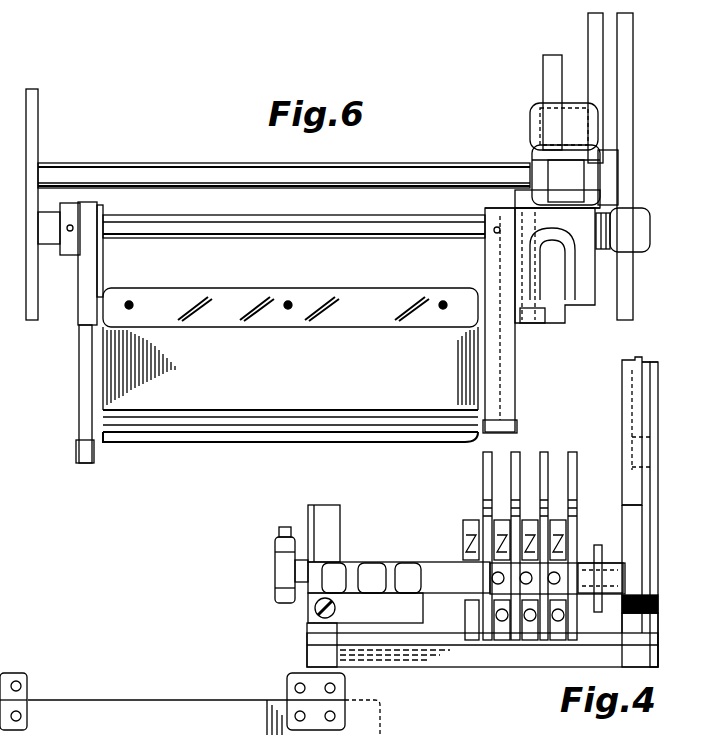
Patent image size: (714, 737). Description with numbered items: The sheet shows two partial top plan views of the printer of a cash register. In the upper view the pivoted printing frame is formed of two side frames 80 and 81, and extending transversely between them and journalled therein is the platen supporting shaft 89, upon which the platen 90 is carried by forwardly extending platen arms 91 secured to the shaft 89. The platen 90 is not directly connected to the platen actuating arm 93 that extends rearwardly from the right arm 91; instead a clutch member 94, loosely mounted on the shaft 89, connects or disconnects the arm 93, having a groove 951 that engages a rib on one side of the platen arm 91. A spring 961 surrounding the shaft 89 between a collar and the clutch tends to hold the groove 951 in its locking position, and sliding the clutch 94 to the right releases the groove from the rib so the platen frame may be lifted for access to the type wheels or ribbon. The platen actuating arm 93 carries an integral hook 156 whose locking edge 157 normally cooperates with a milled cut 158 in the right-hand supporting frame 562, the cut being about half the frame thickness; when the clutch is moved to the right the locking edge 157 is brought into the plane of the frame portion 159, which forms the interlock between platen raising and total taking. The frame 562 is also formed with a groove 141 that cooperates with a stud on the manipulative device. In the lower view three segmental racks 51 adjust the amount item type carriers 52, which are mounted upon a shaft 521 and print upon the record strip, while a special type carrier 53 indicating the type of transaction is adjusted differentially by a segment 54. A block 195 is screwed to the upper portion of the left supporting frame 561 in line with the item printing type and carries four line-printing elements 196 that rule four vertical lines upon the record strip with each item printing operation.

In FIG. 6, the printer side frame 80 is at (38, 127).
In FIG. 6, the printer side frame 81 is at (633, 82).
In FIG. 6, the platen supporting shaft 89 is at (182, 215).
In FIG. 6, the platen 90 is at (290, 365).
In FIG. 6, the platen arm 91 is at (82, 277).
In FIG. 6, the platen actuating arm 93 is at (588, 32).
In FIG. 6, the clutch member 94 is at (555, 265).
In FIG. 6, the hook 156 is at (564, 126).
In FIG. 6, the locking edge 157 is at (533, 156).
In FIG. 6, the milled cut 158 is at (520, 195).
In FIG. 4, the milled cut 158 is at (632, 400).
In FIG. 6, the frame portion 159 is at (600, 156).
In FIG. 4, the frame portion 159 is at (652, 362).
In FIG. 6, the supporting frame 562 is at (548, 70).
In FIG. 4, the supporting frame 562 is at (630, 507).
In FIG. 6, the groove 951 is at (530, 330).
In FIG. 6, the spring 961 is at (600, 252).
In FIG. 4, the segmental rack 51 is at (571, 452).
In FIG. 4, the item type wheel 52 is at (540, 640).
In FIG. 4, the special type carrier 53 is at (474, 513).
In FIG. 4, the segment 54 is at (486, 466).
In FIG. 4, the groove 141 is at (658, 437).
In FIG. 4, the block 195 is at (365, 608).
In FIG. 4, the line-printing element 196 is at (405, 563).
In FIG. 4, the shaft 521 is at (275, 572).
In FIG. 4, the supporting frame 561 is at (340, 528).